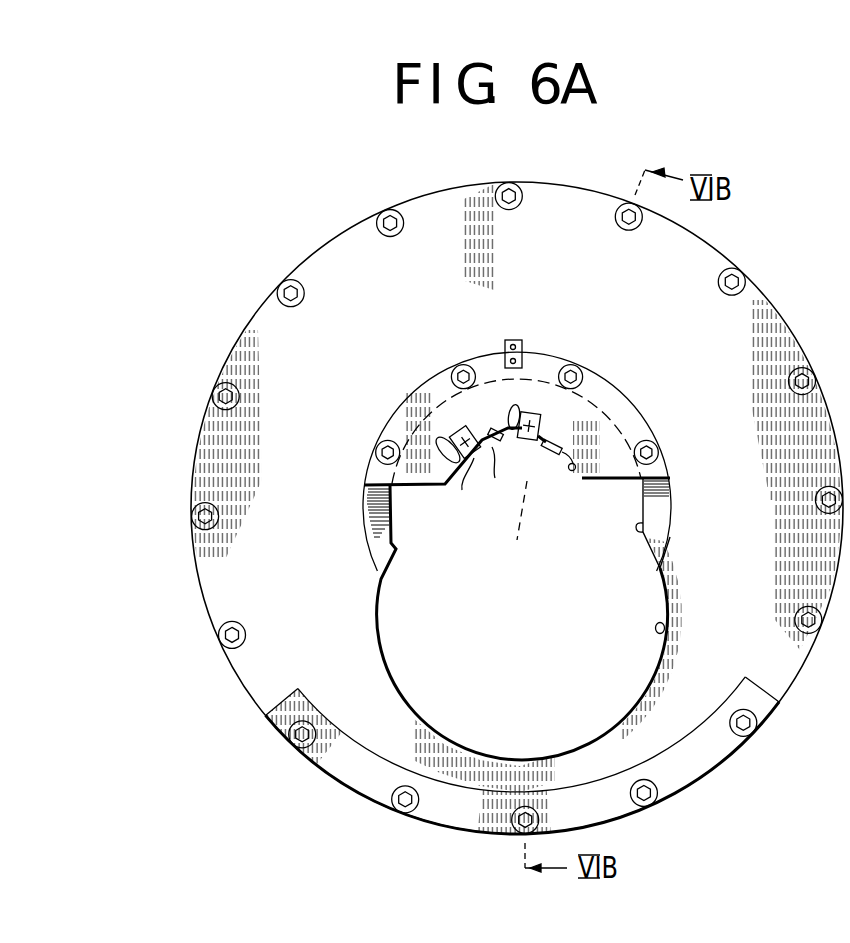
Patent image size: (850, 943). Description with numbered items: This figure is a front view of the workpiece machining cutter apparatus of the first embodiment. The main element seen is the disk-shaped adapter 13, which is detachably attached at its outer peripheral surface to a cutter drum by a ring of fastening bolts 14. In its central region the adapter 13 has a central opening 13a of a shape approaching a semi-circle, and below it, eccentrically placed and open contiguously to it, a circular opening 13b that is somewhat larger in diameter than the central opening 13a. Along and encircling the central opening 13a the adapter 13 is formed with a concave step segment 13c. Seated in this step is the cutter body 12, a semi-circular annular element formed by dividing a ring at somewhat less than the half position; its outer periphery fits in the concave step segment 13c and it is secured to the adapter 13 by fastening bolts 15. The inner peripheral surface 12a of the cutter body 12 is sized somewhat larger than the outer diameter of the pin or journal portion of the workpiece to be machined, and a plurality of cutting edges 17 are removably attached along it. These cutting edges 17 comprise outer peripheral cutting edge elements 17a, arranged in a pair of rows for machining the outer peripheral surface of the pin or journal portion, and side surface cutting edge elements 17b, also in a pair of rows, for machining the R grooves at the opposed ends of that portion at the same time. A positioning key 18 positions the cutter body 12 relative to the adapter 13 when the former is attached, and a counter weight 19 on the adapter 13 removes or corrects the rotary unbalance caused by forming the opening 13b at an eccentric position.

The cutter body 12 is at (606, 388).
The inner peripheral surface 12a is at (571, 464).
The adapter 13 is at (773, 345).
The central opening 13a is at (645, 530).
The circular opening 13b is at (664, 631).
The concave step segment 13c is at (670, 493).
The fastening bolts 14 is at (731, 272).
The fastening bolts 15 is at (563, 366).
The cutting edges 17 is at (478, 483).
The outer peripheral cutting edge elements 17a is at (505, 462).
The side surface cutting edge elements 17b is at (459, 473).
The positioning key 18 is at (506, 344).
The counter weight 19 is at (703, 753).